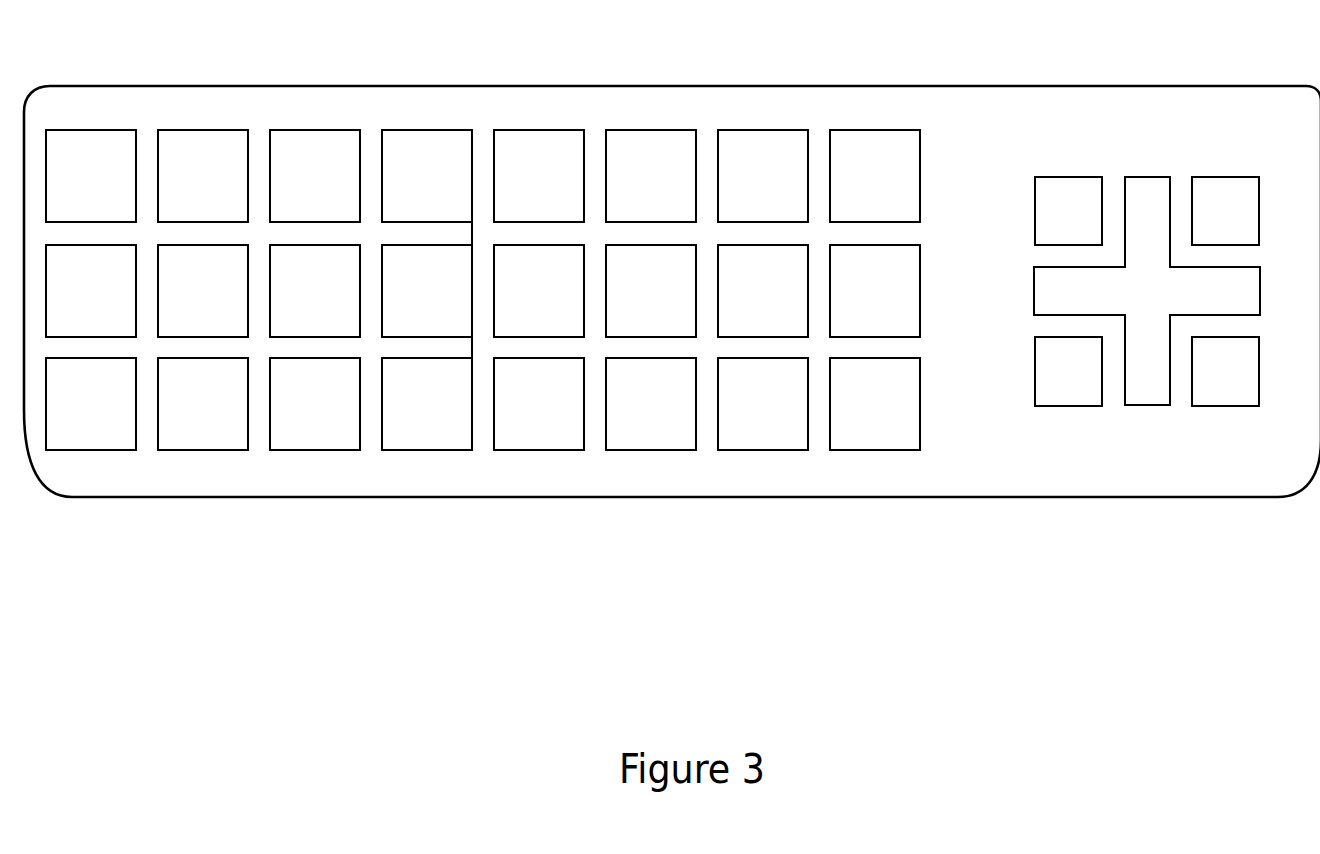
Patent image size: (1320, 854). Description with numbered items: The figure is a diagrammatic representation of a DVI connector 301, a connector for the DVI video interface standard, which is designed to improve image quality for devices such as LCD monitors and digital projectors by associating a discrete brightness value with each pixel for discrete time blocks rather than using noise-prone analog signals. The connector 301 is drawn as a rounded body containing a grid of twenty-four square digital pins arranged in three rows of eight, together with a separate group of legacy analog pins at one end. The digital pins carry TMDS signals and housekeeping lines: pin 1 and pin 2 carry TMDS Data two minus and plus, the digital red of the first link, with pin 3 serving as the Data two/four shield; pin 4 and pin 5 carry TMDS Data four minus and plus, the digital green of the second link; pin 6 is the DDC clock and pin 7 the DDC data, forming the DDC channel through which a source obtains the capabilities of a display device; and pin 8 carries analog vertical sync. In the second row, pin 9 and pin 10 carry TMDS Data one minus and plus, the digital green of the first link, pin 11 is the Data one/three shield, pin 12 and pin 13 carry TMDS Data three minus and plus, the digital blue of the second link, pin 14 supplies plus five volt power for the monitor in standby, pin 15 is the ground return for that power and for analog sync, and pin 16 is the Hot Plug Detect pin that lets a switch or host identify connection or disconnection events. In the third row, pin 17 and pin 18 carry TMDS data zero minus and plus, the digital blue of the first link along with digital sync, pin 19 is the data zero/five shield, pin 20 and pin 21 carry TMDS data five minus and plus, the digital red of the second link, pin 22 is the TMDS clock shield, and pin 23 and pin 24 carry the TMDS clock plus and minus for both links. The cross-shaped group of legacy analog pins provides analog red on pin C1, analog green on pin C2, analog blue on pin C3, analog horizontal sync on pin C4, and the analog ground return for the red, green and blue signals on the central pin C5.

The DVI connector 301 is at (810, 86).
The pin 1 (TMDS Data 2−) 1 is at (91, 176).
The pin 2 (TMDS Data 2+) 2 is at (203, 176).
The pin 3 (TMDS Data 2/4 shield) 3 is at (315, 176).
The pin 4 (TMDS Data 4−) 4 is at (427, 290).
The pin 5 (TMDS Data 4+) 5 is at (539, 176).
The pin 6 (DDC clock) 6 is at (651, 176).
The pin 7 (DDC data) 7 is at (763, 176).
The pin 8 (Analog Vertical Sync) 8 is at (875, 176).
The pin 9 (TMDS Data 1−) 9 is at (91, 291).
The pin 10 (TMDS Data 1+) 10 is at (203, 291).
The pin 11 (TMDS Data 1/3 shield) 11 is at (315, 291).
The pin 12 (TMDS Data 3−) 12 is at (427, 291).
The pin 13 (TMDS Data 3+) 13 is at (539, 291).
The pin 14 (+5V power) 14 is at (651, 291).
The pin 15 (ground return) 15 is at (763, 291).
The pin 16 (Hot Plug Detect) 16 is at (875, 291).
The pin 17 (TMDS data 0−) 17 is at (91, 404).
The pin 18 (TMDS data 0+) 18 is at (203, 404).
The pin 19 (TMDS data 0/5 shield) 19 is at (315, 404).
The pin 20 (TMDS data 5−) 20 is at (427, 404).
The pin 21 (TMDS data 5+) 21 is at (539, 404).
The pin 22 (TMDS clock shield) 22 is at (651, 404).
The pin 23 (TMDS clock+) 23 is at (763, 404).
The pin 24 (TMDS clock−) 24 is at (875, 404).
The pin C1 (Analog Red) C1 is at (1068, 211).
The pin C2 (Analog Green) C2 is at (1225, 211).
The pin C3 (Analog Blue) C3 is at (1068, 371).
The pin C4 (Analog Horizontal Sync) C4 is at (1225, 371).
The pin C5 (Analog Ground Return) C5 is at (1147, 291).